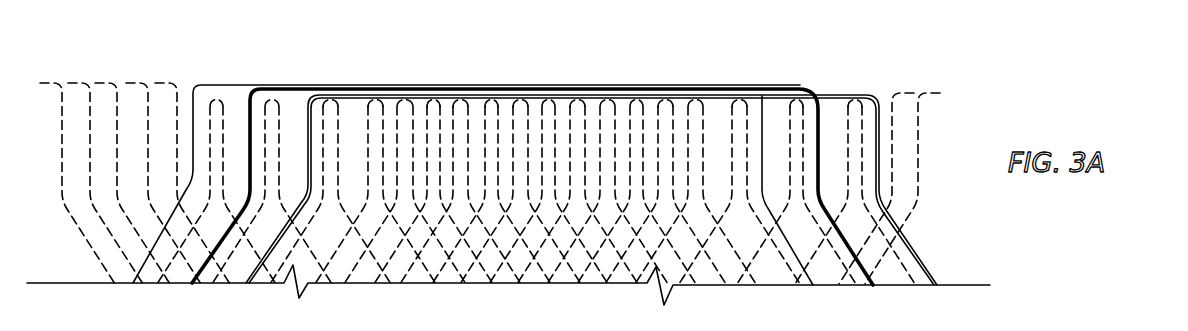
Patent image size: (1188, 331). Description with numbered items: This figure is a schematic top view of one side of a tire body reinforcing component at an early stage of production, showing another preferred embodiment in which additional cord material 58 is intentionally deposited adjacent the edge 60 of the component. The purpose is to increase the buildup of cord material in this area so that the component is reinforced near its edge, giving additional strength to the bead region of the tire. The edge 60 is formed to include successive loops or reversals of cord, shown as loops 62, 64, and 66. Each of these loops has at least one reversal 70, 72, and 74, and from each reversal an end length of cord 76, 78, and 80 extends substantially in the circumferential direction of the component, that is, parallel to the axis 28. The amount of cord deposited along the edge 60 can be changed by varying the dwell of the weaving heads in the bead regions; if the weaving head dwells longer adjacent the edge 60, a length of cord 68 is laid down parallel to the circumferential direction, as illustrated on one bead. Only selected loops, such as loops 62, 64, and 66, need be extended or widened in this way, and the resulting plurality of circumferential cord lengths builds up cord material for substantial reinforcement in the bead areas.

The axis 28 is at (966, 287).
The additional cord material 58 is at (268, 88).
The edge 60 is at (920, 85).
The loop 62 is at (212, 92).
The loop 64 is at (309, 94).
The loop 66 is at (550, 97).
The length of cord 68 is at (763, 95).
The reversal 70 is at (230, 85).
The reversal 72 is at (307, 98).
The reversal 74 is at (404, 98).
The end length 76 is at (602, 97).
The end length 78 is at (639, 97).
The end length 80 is at (689, 97).